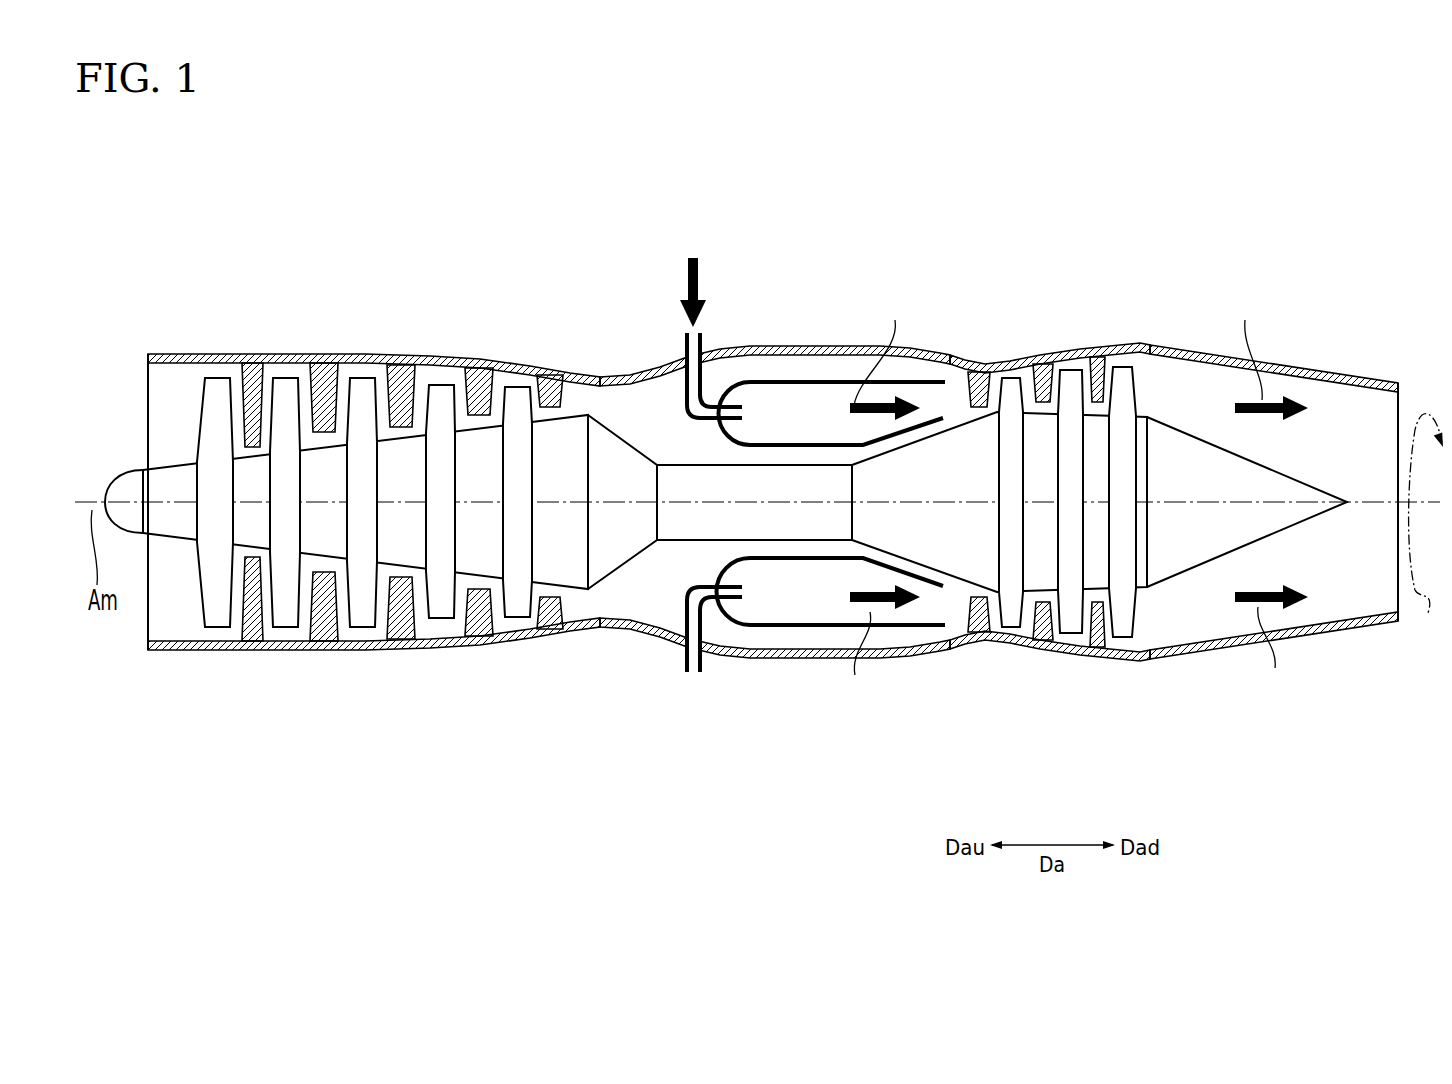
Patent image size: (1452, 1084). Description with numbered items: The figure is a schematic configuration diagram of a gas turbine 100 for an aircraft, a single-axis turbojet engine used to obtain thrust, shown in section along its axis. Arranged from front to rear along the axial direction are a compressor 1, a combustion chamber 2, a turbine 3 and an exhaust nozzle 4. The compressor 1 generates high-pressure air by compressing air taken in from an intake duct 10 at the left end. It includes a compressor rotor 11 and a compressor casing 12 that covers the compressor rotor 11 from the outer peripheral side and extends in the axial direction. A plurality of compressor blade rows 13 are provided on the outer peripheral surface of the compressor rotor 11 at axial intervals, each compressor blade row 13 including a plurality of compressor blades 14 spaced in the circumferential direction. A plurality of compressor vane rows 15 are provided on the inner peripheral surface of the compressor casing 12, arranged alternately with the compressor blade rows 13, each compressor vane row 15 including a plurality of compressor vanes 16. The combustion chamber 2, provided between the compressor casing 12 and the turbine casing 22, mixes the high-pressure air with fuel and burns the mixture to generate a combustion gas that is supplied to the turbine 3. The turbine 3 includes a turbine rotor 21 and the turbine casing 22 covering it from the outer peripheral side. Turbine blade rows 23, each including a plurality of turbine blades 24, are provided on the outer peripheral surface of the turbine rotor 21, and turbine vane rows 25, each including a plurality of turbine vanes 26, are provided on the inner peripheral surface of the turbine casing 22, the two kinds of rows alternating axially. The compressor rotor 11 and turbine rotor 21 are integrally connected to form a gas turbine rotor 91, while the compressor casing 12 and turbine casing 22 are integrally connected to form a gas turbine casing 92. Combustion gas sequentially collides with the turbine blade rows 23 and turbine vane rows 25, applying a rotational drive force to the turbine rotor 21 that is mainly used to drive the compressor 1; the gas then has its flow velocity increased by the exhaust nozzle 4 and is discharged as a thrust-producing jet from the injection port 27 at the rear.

The gas turbine 100 is at (1189, 205).
The compressor 1 is at (360, 330).
The combustion chamber 2 is at (810, 328).
The turbine 3 is at (1128, 327).
The exhaust nozzle 4 is at (1295, 350).
The intake duct 10 is at (147, 380).
The compressor rotor 11 is at (557, 560).
The compressor casing 12 is at (234, 356).
The compressor blade row 13 is at (217, 622).
The compressor blade 14 is at (361, 580).
The compressor vane row 15 is at (403, 626).
The compressor vane 16 is at (402, 573).
The turbine rotor 21 is at (980, 553).
The turbine casing 22 is at (1015, 360).
The turbine blade row 23 is at (1072, 622).
The turbine blade 24 is at (1117, 575).
The turbine vane row 25 is at (980, 620).
The turbine vane 26 is at (1036, 570).
The injection port 27 is at (1398, 408).
The gas turbine rotor 91 is at (726, 597).
The gas turbine casing 92 is at (649, 456).